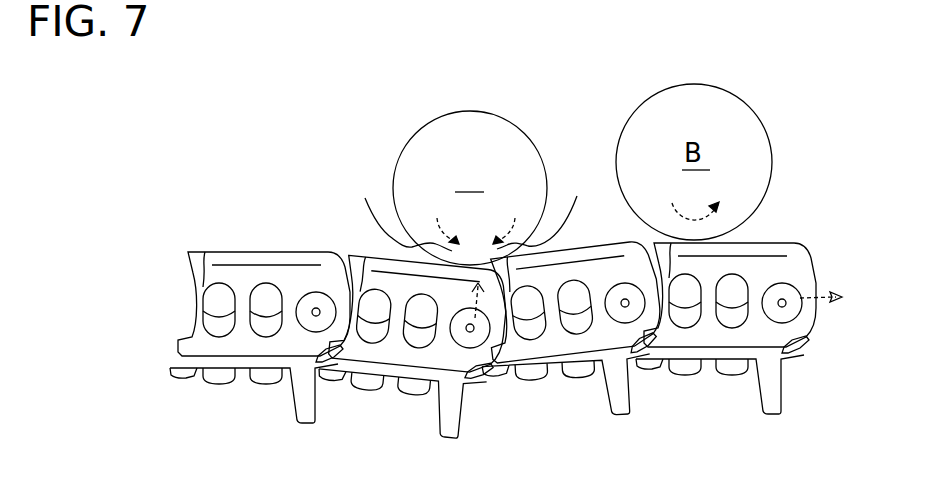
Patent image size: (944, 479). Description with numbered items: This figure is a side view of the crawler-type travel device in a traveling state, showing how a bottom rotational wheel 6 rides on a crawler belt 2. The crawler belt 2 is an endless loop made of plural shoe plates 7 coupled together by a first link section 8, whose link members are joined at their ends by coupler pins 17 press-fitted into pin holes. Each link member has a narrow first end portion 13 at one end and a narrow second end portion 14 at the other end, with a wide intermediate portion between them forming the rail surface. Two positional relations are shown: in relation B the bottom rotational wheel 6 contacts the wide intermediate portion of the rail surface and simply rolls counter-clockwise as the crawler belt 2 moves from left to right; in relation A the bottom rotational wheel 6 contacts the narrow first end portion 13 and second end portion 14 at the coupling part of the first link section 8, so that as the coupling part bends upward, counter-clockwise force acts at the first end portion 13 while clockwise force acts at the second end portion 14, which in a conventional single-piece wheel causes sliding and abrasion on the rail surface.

The crawler belt 2 is at (506, 289).
The bottom rotational wheel 6 is at (463, 130).
The shoe plate 7 is at (242, 363).
The first link section 8 is at (272, 251).
The first end portion 13 is at (403, 212).
The second end portion 14 is at (544, 210).
The coupler pin 17 is at (314, 292).